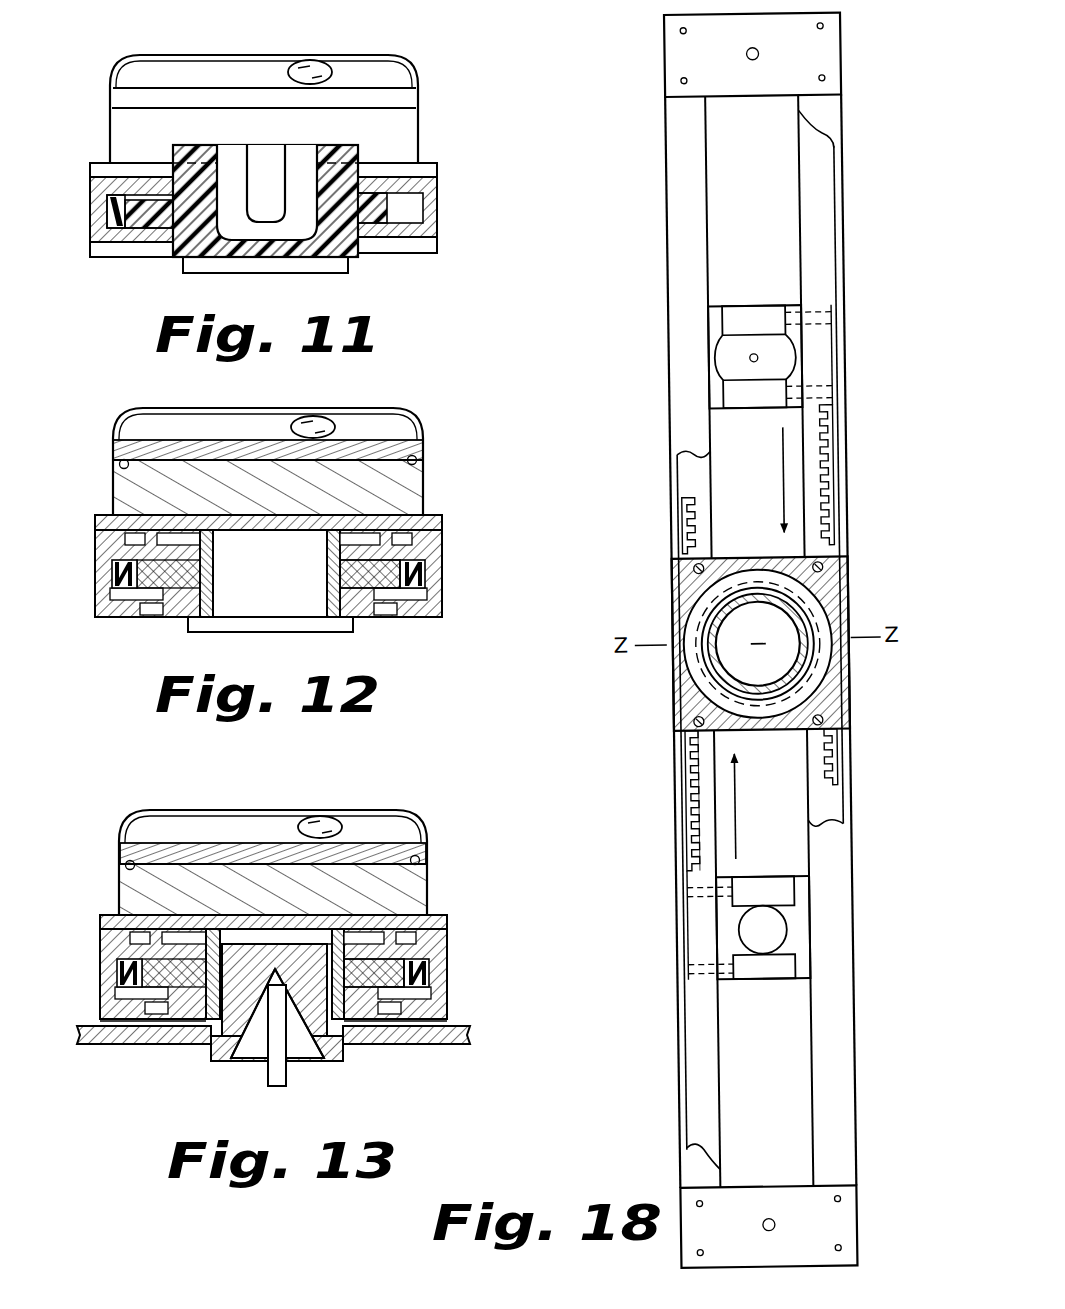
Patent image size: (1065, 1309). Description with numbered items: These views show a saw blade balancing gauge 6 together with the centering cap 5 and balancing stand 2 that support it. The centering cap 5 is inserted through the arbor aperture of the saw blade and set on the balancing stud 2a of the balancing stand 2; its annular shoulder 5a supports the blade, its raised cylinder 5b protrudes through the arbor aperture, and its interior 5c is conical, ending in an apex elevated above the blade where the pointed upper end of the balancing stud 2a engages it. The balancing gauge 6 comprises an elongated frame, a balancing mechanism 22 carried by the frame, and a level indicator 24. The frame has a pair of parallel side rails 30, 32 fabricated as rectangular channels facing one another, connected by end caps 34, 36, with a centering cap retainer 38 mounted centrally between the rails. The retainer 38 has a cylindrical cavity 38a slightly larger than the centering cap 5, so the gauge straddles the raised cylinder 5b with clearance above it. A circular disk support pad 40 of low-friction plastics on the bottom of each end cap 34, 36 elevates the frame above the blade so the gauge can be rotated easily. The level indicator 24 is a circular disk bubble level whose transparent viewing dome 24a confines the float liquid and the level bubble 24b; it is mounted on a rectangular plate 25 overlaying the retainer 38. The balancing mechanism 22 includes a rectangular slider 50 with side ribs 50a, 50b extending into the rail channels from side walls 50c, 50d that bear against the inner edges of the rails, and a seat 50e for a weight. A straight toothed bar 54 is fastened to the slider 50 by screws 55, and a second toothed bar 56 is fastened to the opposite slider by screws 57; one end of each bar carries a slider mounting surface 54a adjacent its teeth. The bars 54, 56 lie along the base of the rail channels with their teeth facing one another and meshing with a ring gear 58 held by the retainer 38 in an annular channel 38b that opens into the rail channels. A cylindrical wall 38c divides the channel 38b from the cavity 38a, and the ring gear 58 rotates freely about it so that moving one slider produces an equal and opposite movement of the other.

In FIG. 13, the balancing stand 2 is at (262, 1072).
In FIG. 13, the balancing stud 2a is at (280, 1086).
In FIG. 13, the centering cap 5 is at (330, 1050).
In FIG. 13, the annular shoulder 5a is at (162, 1088).
In FIG. 13, the raised cylinder 5b is at (238, 1035).
In FIG. 13, the conical interior 5c is at (300, 1035).
In FIG. 13, the balancing gauge 6 is at (452, 900).
In FIG. 18, the balancing mechanism 22 is at (783, 305).
In FIG. 11, the level indicator 24 is at (420, 120).
In FIG. 12, the level indicator 24 is at (423, 485).
In FIG. 13, the level indicator 24 is at (427, 870).
In FIG. 11, the transparent circular viewing dome 24a is at (412, 56).
In FIG. 12, the transparent circular viewing dome 24a is at (415, 408).
In FIG. 13, the transparent circular viewing dome 24a is at (408, 811).
In FIG. 11, the level bubble 24b is at (315, 62).
In FIG. 12, the level bubble 24b is at (313, 417).
In FIG. 13, the level bubble 24b is at (320, 817).
In FIG. 11, the rectangular mounting plate 25 is at (432, 163).
In FIG. 12, the rectangular mounting plate 25 is at (440, 515).
In FIG. 13, the rectangular mounting plate 25 is at (440, 915).
In FIG. 11, the side rail 30 is at (90, 230).
In FIG. 12, the side rail 30 is at (95, 595).
In FIG. 13, the side rail 30 is at (100, 990).
In FIG. 18, the side rail 30 is at (677, 218).
In FIG. 11, the side rail 32 is at (440, 222).
In FIG. 12, the side rail 32 is at (445, 590).
In FIG. 13, the side rail 32 is at (450, 975).
In FIG. 18, the side rail 32 is at (832, 118).
In FIG. 18, the end cap 34 is at (825, 1226).
In FIG. 18, the end cap 36 is at (810, 42).
In FIG. 12, the centering cap retainer 38 is at (180, 613).
In FIG. 13, the centering cap retainer 38 is at (170, 1015).
In FIG. 18, the centering cap retainer 38 is at (740, 735).
In FIG. 12, the cylindrical cavity 38a is at (215, 590).
In FIG. 13, the cylindrical cavity 38a is at (250, 910).
In FIG. 18, the cylindrical cavity 38a is at (782, 628).
In FIG. 12, the annular channel 38b is at (180, 540).
In FIG. 18, the annular channel 38b is at (836, 762).
In FIG. 12, the cylindrical wall 38c is at (215, 580).
In FIG. 18, the cylindrical wall 38c is at (752, 690).
In FIG. 11, the circular disk support pad 40 is at (330, 273).
In FIG. 12, the circular disk support pad 40 is at (300, 632).
In FIG. 13, the circular disk support pad 40 is at (370, 1030).
In FIG. 11, the slider 50 is at (160, 232).
In FIG. 11, the side rib 50a is at (150, 257).
In FIG. 11, the side rib 50b is at (390, 205).
In FIG. 11, the side wall 50c is at (140, 177).
In FIG. 11, the side wall 50d is at (430, 243).
In FIG. 11, the seat 50e is at (228, 235).
In FIG. 11, the straight toothed bar 54 is at (107, 205).
In FIG. 12, the straight toothed bar 54 is at (110, 567).
In FIG. 13, the straight toothed bar 54 is at (115, 968).
In FIG. 18, the straight toothed bar 54 is at (680, 820).
In FIG. 18, the slider mounting surface 54a is at (690, 915).
In FIG. 18, the screws 55 is at (738, 884).
In FIG. 12, the straight toothed bar 56 is at (430, 575).
In FIG. 13, the straight toothed bar 56 is at (440, 965).
In FIG. 18, the straight toothed bar 56 is at (828, 450).
In FIG. 18, the screws 57 is at (782, 316).
In FIG. 12, the ring gear 58 is at (355, 580).
In FIG. 13, the ring gear 58 is at (430, 1000).
In FIG. 18, the ring gear 58 is at (838, 712).